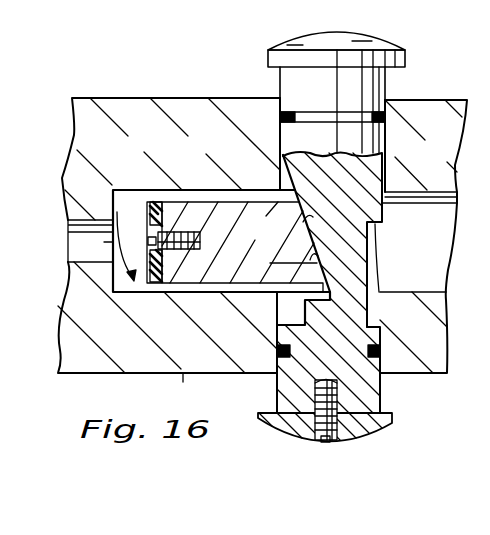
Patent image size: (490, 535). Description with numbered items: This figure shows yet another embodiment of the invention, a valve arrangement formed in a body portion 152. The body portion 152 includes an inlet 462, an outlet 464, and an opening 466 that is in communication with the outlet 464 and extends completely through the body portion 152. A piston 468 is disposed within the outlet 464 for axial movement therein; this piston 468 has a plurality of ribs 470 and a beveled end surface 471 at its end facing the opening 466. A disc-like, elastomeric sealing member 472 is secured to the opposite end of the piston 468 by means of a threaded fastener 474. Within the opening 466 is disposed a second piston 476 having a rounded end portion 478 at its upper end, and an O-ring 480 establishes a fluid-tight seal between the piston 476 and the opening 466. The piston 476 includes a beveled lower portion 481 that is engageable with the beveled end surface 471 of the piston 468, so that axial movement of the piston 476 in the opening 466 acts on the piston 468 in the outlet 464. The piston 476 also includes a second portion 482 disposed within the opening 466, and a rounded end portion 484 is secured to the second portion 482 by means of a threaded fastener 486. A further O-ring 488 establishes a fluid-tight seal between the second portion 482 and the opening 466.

The body portion 152 is at (195, 105).
The inlet 462 is at (78, 253).
The outlet 464 is at (452, 223).
The opening 466 is at (375, 168).
The piston 468 is at (213, 273).
The ribs 470 is at (207, 192).
The beveled end surface 471 is at (310, 218).
The sealing member 472 is at (148, 212).
The threaded fastener 474 is at (112, 207).
The piston 476 is at (373, 85).
The rounded end portion 478 is at (372, 33).
The O-ring 480 is at (279, 116).
The beveled lower portion 481 is at (375, 262).
The second portion 482 is at (370, 385).
The rounded end portion 484 is at (380, 416).
The threaded fastener 486 is at (325, 437).
The O-ring 488 is at (383, 350).